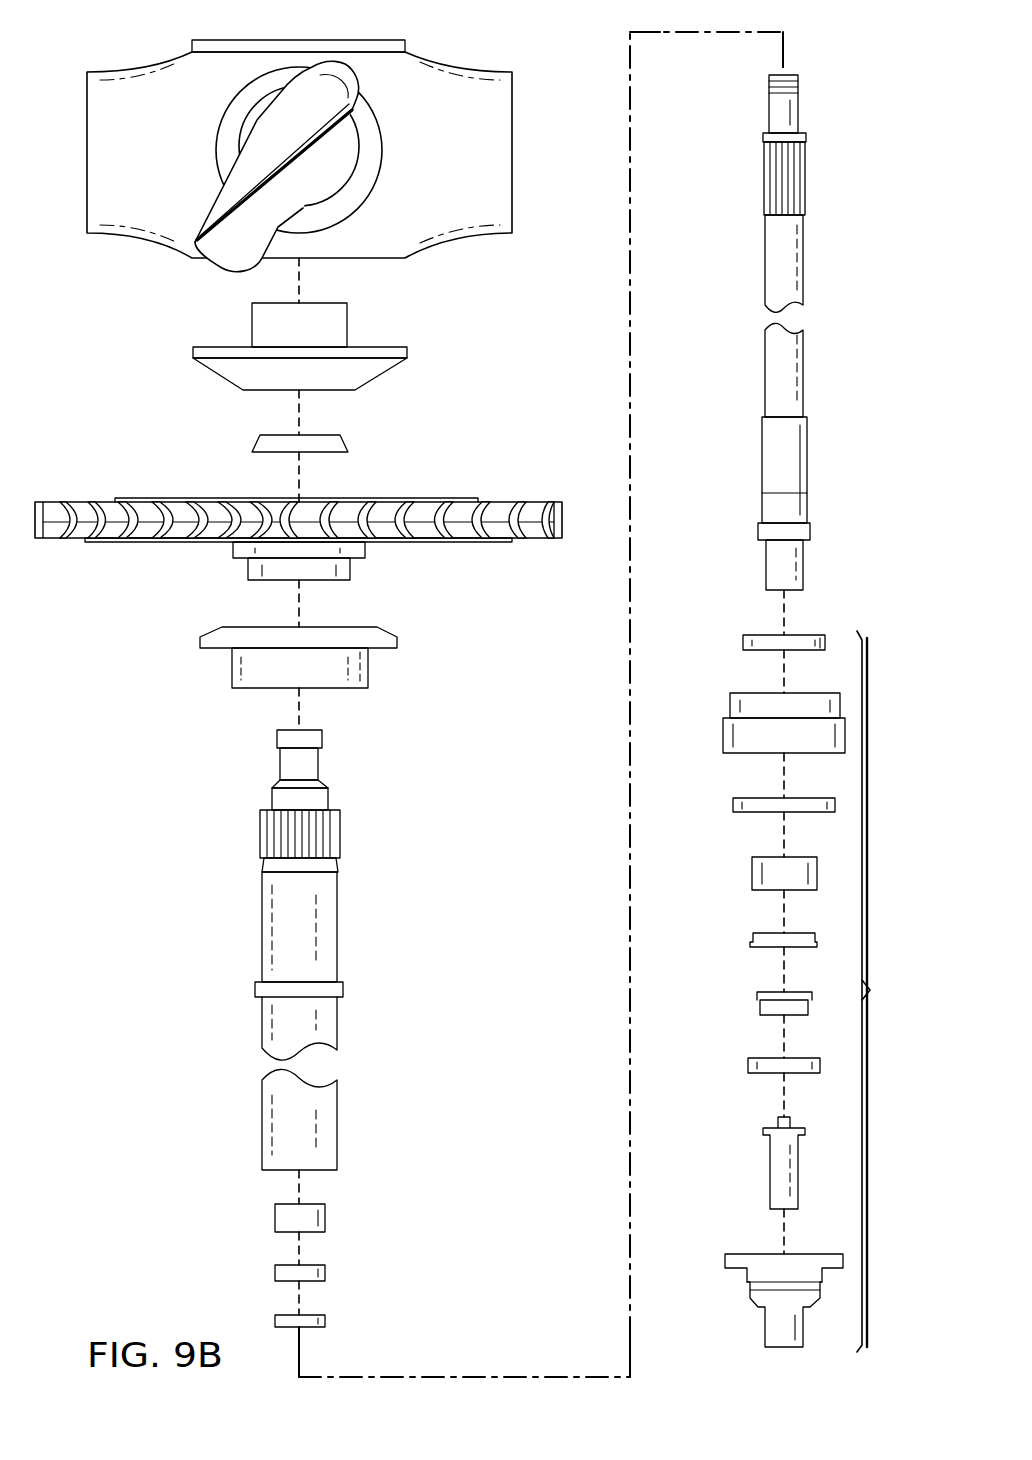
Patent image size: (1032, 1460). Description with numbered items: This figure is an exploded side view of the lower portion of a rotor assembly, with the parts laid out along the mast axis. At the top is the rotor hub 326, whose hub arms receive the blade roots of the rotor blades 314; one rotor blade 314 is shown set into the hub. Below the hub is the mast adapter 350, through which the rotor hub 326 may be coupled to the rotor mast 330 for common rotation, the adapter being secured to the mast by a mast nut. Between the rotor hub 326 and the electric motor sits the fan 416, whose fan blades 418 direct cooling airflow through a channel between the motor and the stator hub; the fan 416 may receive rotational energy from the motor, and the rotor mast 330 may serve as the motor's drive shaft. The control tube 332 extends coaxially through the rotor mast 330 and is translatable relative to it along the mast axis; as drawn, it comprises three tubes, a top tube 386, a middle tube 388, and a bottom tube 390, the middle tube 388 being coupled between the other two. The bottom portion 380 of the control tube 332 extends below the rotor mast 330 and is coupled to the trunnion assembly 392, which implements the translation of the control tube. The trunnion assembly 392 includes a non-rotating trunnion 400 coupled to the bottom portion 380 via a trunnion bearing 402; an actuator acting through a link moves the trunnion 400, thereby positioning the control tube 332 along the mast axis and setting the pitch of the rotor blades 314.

The rotor hub 326 is at (129, 63).
The rotor blades 314 is at (228, 274).
The mast adapter 350 is at (193, 352).
The fan 416 is at (98, 501).
The fan blades 418 is at (527, 500).
The rotor mast 330 is at (262, 930).
The top tube 386 is at (800, 112).
The control tube 332 is at (807, 269).
The middle tube 388 is at (805, 372).
The bottom portion 380 is at (762, 553).
The bottom tube 390 is at (805, 570).
The trunnion assembly 392 is at (821, 991).
The trunnion 400 is at (722, 735).
The trunnion bearing 402 is at (752, 872).